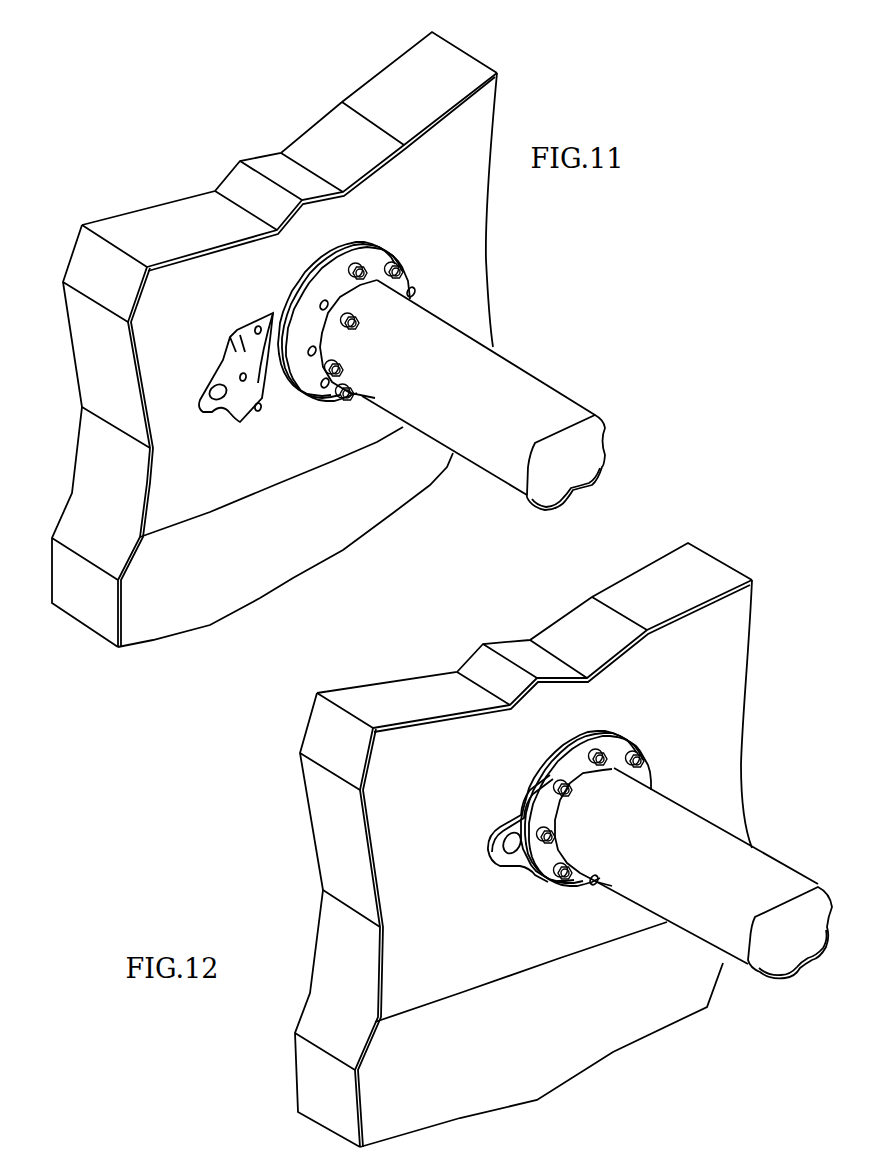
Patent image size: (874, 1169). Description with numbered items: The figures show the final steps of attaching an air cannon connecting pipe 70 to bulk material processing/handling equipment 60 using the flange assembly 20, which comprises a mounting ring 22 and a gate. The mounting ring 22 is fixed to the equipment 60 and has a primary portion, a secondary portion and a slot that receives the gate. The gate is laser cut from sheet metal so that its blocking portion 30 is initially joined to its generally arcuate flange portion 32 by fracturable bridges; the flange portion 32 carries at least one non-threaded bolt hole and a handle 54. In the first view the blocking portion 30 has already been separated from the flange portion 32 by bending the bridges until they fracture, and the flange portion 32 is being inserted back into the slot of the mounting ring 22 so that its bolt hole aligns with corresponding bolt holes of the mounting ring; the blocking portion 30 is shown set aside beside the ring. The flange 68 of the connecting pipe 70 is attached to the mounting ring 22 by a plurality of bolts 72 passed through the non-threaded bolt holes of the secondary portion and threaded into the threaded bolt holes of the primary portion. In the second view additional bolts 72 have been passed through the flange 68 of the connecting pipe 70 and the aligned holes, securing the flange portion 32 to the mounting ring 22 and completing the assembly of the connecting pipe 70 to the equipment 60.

In FIG. 12, the flange assembly 20 is at (656, 718).
In FIG. 11, the mounting ring 22 is at (394, 300).
In FIG. 11, the blocking portion 30 is at (243, 353).
In FIG. 12, the flange portion 32 is at (378, 828).
In FIG. 12, the handle 54 is at (497, 837).
In FIG. 11, the bulk material processing/handling equipment 60 is at (475, 133).
In FIG. 12, the bulk material processing/handling equipment 60 is at (717, 622).
In FIG. 11, the flange 68 is at (337, 268).
In FIG. 12, the flange 68 is at (620, 752).
In FIG. 11, the connecting pipe 70 is at (515, 383).
In FIG. 12, the connecting pipe 70 is at (733, 870).
In FIG. 11, the bolts 72 is at (362, 322).
In FIG. 12, the bolts 72 is at (566, 746).